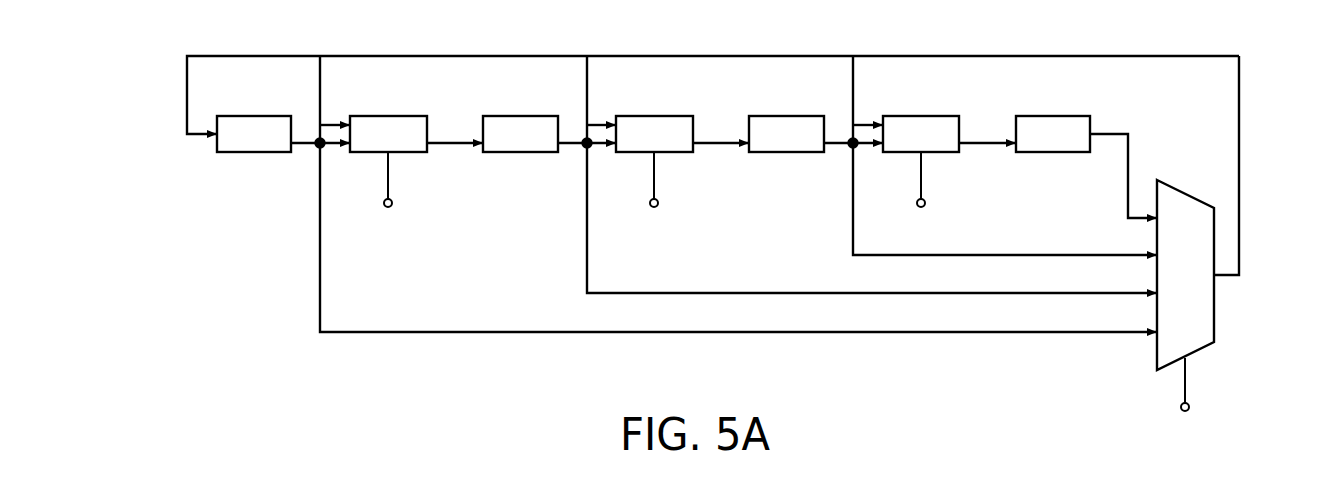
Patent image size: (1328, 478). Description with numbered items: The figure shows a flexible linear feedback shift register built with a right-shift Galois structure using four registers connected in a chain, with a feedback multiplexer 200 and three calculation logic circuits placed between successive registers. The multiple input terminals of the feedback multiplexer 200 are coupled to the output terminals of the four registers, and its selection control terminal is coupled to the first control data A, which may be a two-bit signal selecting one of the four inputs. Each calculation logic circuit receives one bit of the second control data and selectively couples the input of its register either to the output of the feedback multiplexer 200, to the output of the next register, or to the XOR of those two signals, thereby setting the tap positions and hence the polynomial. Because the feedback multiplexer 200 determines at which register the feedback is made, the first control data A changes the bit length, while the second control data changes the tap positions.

The feedback multiplexer 200 is at (1224, 312).
The first control data A is at (1185, 401).